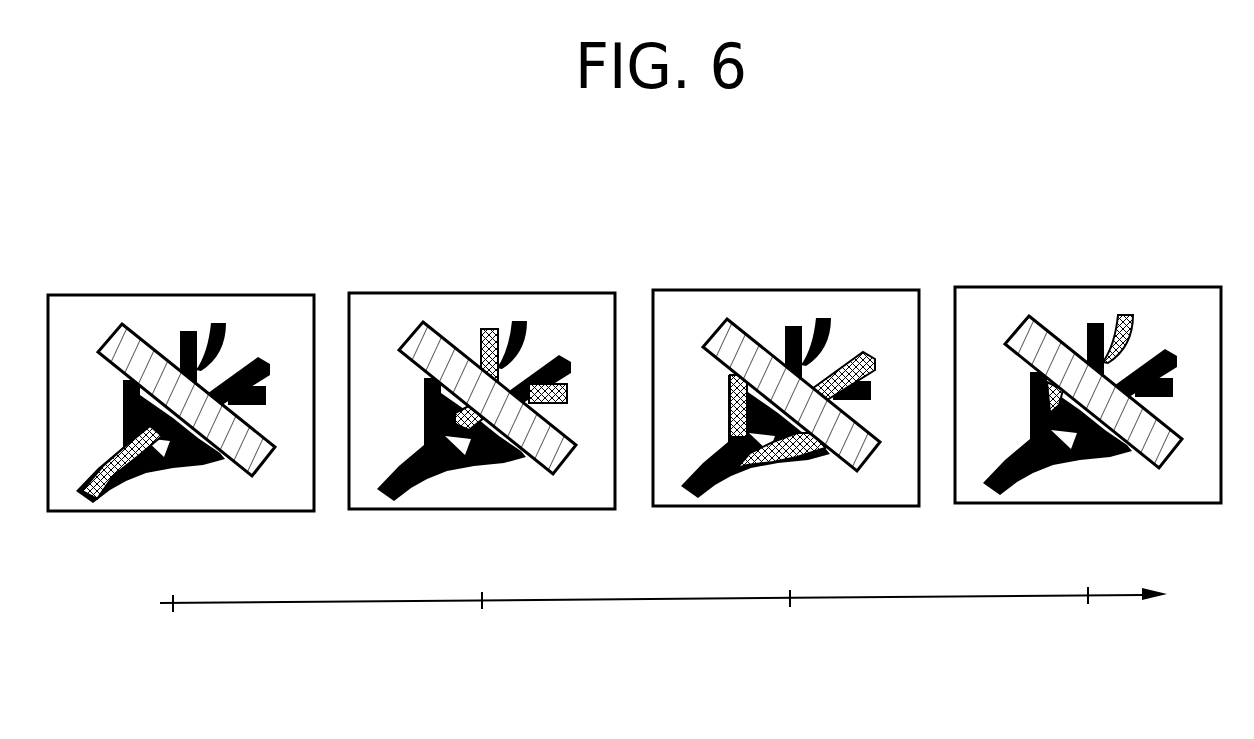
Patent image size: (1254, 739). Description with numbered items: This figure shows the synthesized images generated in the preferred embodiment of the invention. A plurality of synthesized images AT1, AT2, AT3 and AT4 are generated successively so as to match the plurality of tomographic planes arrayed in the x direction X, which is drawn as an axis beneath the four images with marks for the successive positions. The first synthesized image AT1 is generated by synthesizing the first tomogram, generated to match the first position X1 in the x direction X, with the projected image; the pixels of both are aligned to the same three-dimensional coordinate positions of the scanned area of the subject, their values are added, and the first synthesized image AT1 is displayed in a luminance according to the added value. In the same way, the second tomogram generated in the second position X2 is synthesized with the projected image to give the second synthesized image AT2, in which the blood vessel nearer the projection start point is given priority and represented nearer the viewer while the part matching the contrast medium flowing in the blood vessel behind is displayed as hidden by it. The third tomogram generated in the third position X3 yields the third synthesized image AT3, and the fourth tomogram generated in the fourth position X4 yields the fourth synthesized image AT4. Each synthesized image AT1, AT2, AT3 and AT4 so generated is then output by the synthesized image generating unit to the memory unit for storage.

The first synthesized image AT1 is at (187, 271).
The second synthesized image AT2 is at (482, 337).
The third synthesized image AT3 is at (786, 333).
The fourth synthesized image AT4 is at (1088, 330).
The x direction X is at (682, 597).
The first position X1 is at (172, 625).
The second position X2 is at (479, 623).
The third position X3 is at (787, 621).
The fourth position X4 is at (1085, 619).